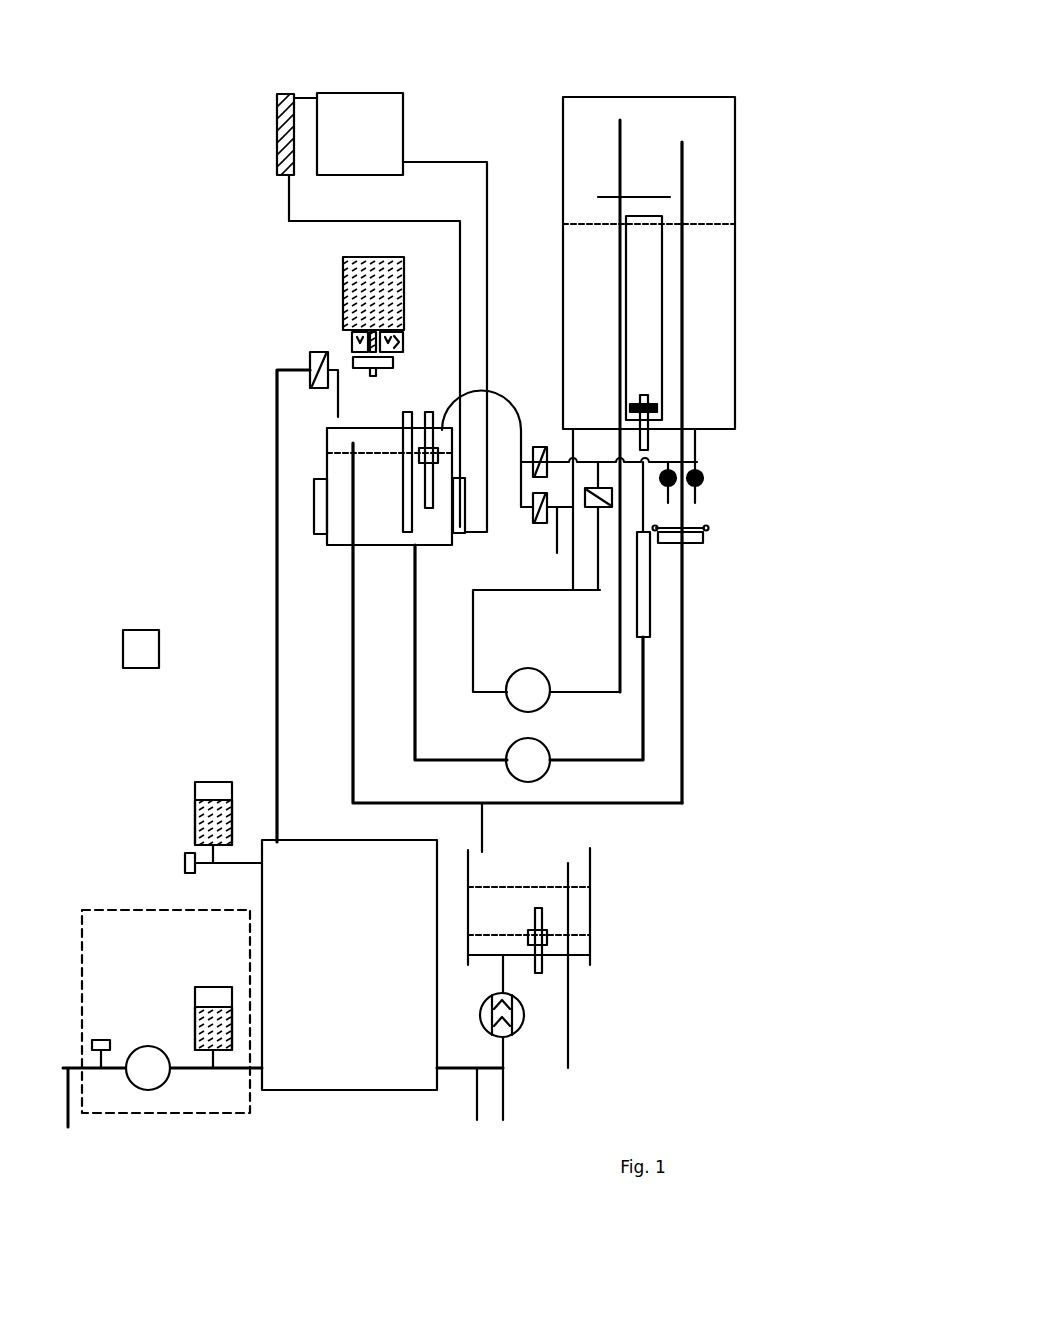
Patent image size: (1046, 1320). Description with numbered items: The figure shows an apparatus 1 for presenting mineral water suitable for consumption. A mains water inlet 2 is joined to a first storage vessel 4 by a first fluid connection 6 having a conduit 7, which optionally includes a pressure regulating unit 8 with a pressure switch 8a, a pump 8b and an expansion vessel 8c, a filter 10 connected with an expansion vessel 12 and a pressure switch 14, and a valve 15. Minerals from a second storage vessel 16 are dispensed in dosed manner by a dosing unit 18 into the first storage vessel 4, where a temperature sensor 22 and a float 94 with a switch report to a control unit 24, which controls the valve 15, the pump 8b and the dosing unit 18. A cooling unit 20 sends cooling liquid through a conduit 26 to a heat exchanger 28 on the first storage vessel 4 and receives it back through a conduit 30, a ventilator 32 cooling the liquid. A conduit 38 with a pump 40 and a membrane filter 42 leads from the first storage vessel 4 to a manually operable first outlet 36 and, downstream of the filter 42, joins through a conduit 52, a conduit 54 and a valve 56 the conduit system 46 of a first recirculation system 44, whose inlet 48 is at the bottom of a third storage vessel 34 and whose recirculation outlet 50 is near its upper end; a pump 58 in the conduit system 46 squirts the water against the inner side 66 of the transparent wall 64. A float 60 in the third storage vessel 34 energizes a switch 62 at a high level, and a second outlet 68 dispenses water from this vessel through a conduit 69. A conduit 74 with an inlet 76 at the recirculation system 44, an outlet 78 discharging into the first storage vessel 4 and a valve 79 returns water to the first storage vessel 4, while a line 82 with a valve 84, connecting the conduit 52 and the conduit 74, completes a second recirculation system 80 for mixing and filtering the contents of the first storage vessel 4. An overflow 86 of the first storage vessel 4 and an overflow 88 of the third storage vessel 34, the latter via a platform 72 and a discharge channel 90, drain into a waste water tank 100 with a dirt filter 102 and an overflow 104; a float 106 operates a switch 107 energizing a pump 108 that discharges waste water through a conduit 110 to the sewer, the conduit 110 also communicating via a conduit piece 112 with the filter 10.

The apparatus 1 is at (718, 945).
The mains water inlet 2 is at (283, 1115).
The first storage vessel 4 is at (338, 545).
The first fluid connection 6 is at (275, 585).
The conduit 7 is at (278, 668).
The pressure regulating unit 8 is at (92, 910).
The pressure switch 8a is at (100, 1040).
The pump 8b is at (150, 1046).
The expansion vessel 8c is at (203, 987).
The filter 10 is at (349, 965).
The expansion vessel 12 is at (205, 782).
The pressure switch 14 is at (185, 858).
The valve 15 is at (310, 357).
The second storage vessel 16 is at (343, 265).
The dosing unit 18 is at (395, 358).
The cooling unit 20 is at (405, 103).
The temperature sensor 22 is at (403, 420).
The control unit 24 is at (133, 630).
The conduit 26 is at (468, 162).
The heat exchanger 28 is at (458, 535).
The conduit 30 is at (441, 221).
The ventilator 32 is at (277, 163).
The third storage vessel 34 is at (735, 392).
The first outlet 36 is at (673, 488).
The conduit 38 is at (417, 723).
The pump 40 is at (528, 760).
The filter 42 is at (650, 612).
The first recirculation system 44 is at (546, 641).
The conduit system 46 is at (620, 275).
The inlet 48 is at (565, 428).
The recirculation outlet 50 is at (620, 128).
The conduit 52 is at (640, 457).
The conduit 54 is at (610, 462).
The valve 56 is at (613, 507).
The pump 58 is at (528, 690).
The float 60 is at (644, 333).
The switch 62 is at (655, 445).
The wall 64 is at (735, 198).
The inner side 66 is at (647, 97).
The second outlet 68 is at (705, 478).
The conduit 69 is at (697, 458).
The platform 72 is at (705, 533).
The conduit 74 is at (500, 398).
The inlet 76 is at (541, 545).
The outlet 78 is at (449, 406).
The valve 79 is at (540, 523).
The second recirculation system 80 is at (529, 652).
The conduit 82 is at (557, 462).
The valve 84 is at (540, 447).
The overflow 86 is at (353, 445).
The overflow 88 is at (683, 152).
The discharge channel 90 is at (682, 722).
The float 94 is at (438, 500).
The waste water tank 100 is at (592, 917).
The dirt filter 102 is at (528, 887).
The overflow 104 is at (568, 1042).
The float 106 is at (547, 938).
The switch 107 is at (542, 967).
The pump 108 is at (523, 1028).
The conduit 110 is at (352, 340).
The conduit piece 112 is at (478, 1106).